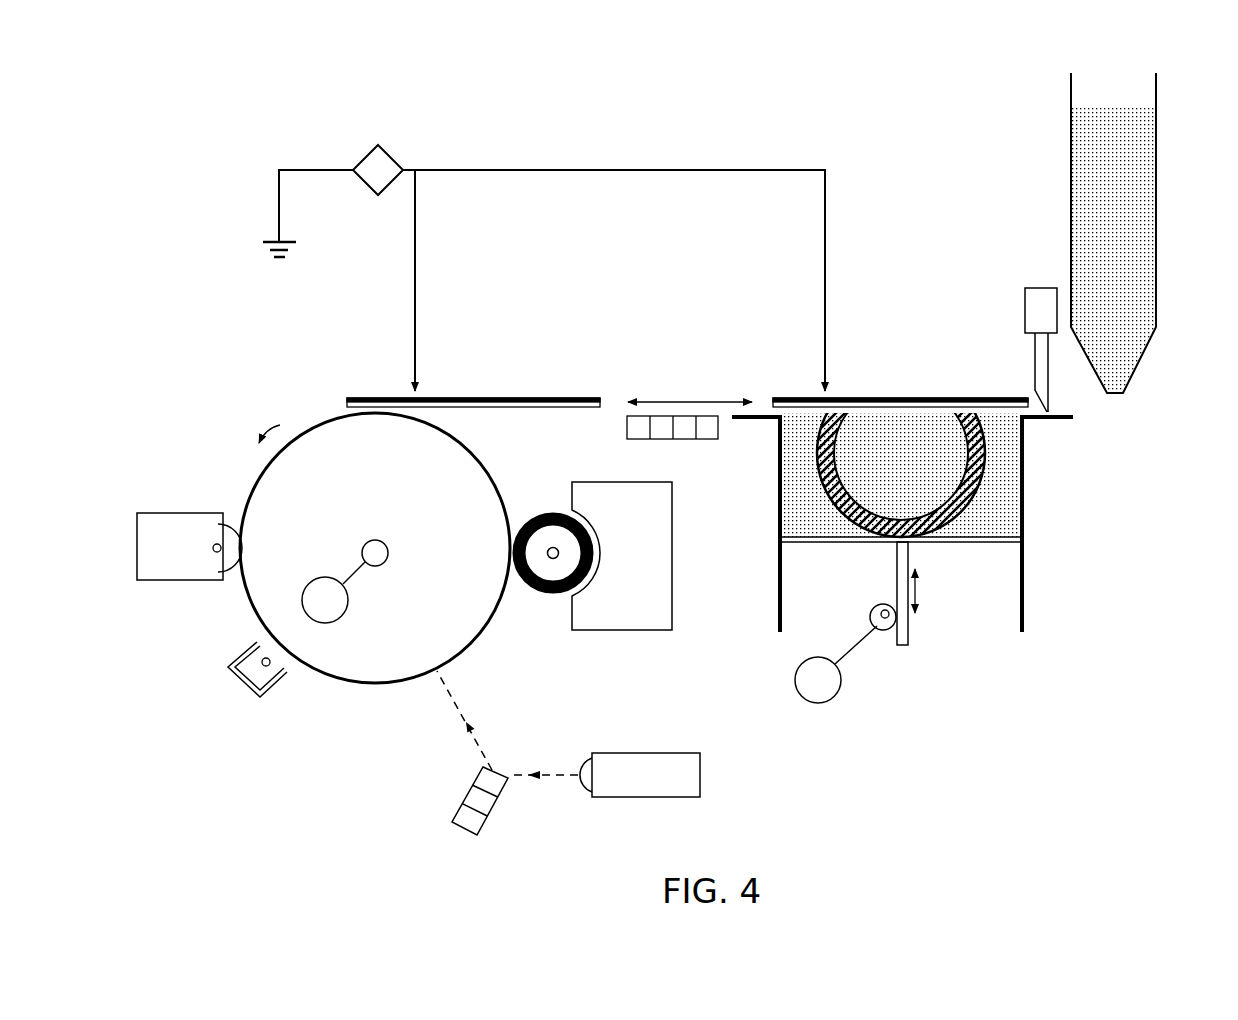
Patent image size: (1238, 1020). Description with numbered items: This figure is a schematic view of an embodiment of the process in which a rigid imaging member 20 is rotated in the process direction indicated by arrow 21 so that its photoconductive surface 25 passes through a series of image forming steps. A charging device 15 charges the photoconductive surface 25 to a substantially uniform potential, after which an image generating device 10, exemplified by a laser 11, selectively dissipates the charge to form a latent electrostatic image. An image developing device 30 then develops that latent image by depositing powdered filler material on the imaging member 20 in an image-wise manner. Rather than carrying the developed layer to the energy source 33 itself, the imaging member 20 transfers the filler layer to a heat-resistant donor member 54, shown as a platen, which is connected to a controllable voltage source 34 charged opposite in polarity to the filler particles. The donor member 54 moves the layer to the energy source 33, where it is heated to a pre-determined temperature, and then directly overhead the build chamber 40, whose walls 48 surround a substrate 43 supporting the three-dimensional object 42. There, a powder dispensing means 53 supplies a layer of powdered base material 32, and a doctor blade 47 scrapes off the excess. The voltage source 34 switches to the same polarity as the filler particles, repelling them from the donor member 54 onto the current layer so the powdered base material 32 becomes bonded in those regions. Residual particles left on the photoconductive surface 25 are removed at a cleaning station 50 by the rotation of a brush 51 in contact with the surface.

The image generating device 10 is at (586, 767).
The laser 11 is at (685, 797).
The charging device 15 is at (259, 699).
The imaging member 20 is at (391, 572).
The arrow 21 is at (261, 425).
The photoconductive surface 25 is at (494, 470).
The image developing device 30 is at (569, 652).
The powdered base material 32 is at (1143, 333).
The energy source 33 is at (658, 440).
The voltage source 34 is at (366, 183).
The build chamber 40 is at (903, 465).
The three-dimensional object 42 is at (855, 504).
The substrate 43 is at (862, 545).
The doctor blade 47 is at (1025, 300).
The walls 48 is at (1022, 632).
The cleaning station 50 is at (207, 510).
The brush 51 is at (236, 530).
The powder dispensing means 53 is at (1071, 289).
The donor member 54 is at (436, 399).